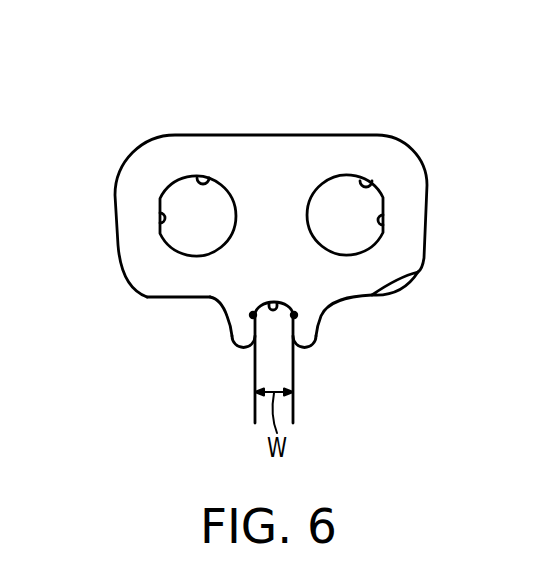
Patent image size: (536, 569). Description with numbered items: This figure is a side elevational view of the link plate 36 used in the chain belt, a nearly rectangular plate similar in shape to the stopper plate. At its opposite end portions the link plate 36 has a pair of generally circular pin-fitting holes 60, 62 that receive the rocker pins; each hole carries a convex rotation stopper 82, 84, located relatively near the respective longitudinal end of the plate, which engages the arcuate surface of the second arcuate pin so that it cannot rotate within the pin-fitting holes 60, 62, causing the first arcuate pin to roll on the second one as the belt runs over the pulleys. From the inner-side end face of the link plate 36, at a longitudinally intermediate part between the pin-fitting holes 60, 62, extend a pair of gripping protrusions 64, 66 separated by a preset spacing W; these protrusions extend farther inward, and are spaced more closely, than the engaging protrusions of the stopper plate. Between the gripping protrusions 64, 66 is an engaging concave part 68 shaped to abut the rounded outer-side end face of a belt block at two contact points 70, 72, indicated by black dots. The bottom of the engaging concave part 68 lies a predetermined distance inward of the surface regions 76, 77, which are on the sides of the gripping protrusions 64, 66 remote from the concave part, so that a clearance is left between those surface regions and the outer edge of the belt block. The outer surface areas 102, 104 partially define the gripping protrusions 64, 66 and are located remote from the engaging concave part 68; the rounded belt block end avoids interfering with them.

The link plate 36 is at (127, 94).
The pin-fitting hole 60 is at (197, 174).
The pin-fitting hole 62 is at (359, 177).
The rotation stopper 82 is at (158, 218).
The rotation stopper 84 is at (385, 220).
The surface region 77 is at (416, 270).
The outer surface area 104 is at (324, 316).
The gripping protrusion 66 is at (310, 331).
The engaging concave part 68 is at (273, 305).
The gripping protrusion 64 is at (240, 332).
The outer surface area 102 is at (226, 318).
The surface region 76 is at (184, 300).
The contact point 70 is at (253, 314).
The contact point 72 is at (294, 314).